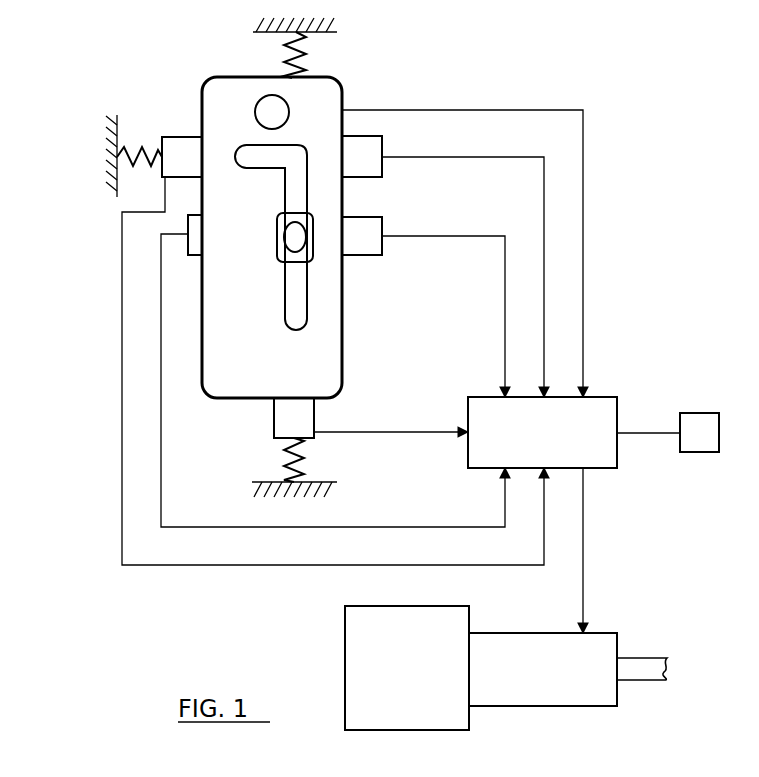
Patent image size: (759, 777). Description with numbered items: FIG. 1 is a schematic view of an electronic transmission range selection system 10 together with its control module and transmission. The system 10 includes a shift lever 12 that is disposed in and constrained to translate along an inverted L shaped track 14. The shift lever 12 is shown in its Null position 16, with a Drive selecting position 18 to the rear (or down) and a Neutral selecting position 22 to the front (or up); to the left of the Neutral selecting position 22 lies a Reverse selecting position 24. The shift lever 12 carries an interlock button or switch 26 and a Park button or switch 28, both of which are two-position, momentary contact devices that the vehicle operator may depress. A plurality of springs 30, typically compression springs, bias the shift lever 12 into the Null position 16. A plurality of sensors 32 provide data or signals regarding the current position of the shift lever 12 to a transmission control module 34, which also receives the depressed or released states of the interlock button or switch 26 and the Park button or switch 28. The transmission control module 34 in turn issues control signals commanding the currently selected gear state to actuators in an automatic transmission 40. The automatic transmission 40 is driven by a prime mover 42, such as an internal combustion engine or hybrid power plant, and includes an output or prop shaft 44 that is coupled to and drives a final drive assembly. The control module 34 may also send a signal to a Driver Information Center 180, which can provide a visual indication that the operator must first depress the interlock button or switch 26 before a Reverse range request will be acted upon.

The electronic transmission range selection system 10 is at (640, 50).
The shift lever 12 is at (400, 88).
The inverted L shaped track 14 is at (303, 295).
The Null position 16 is at (307, 255).
The Drive selecting position 18 is at (322, 330).
The Neutral selecting position 22 is at (323, 165).
The Reverse selecting position 24 is at (218, 140).
The interlock button or switch 26 is at (195, 248).
The Park button or switch 28 is at (268, 103).
The springs 30 is at (305, 52).
The sensors 32 is at (180, 150).
The transmission control module 34 is at (605, 410).
The automatic transmission 40 is at (550, 678).
The prime mover 42 is at (418, 678).
The output or prop shaft 44 is at (637, 665).
The Driver Information Center 180 is at (700, 430).